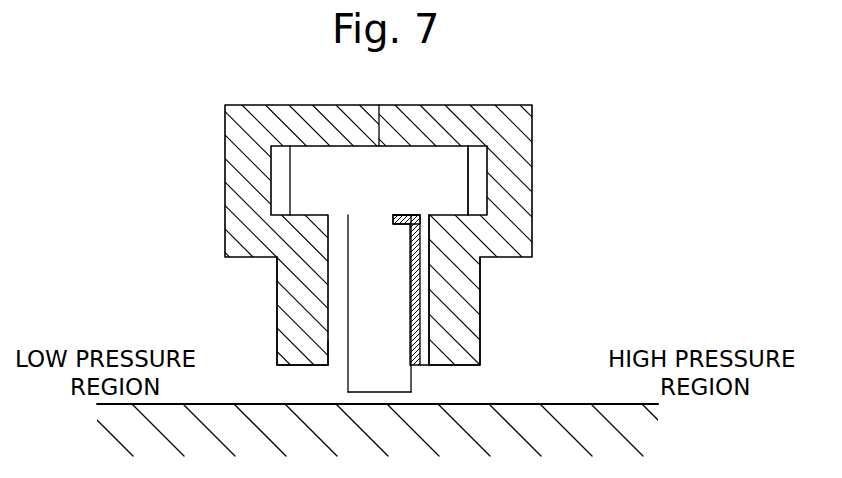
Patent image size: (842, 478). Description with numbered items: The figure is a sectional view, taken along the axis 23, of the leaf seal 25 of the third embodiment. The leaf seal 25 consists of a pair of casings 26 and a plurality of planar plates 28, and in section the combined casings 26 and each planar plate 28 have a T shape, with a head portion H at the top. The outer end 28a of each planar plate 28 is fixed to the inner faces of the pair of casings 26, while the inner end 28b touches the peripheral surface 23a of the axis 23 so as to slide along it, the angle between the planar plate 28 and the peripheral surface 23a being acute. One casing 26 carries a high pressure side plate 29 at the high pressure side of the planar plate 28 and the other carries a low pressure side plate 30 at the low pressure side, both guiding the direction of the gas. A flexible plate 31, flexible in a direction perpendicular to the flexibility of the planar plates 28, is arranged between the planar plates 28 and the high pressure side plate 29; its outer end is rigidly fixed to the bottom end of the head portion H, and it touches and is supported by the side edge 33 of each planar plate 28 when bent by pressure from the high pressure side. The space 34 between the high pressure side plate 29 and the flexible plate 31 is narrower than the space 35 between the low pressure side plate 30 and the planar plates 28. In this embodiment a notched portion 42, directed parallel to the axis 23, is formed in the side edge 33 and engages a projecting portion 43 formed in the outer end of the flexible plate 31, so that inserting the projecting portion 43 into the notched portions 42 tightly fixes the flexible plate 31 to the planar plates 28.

The axis 23 is at (575, 450).
The peripheral surface 23a is at (585, 404).
The leaf seal 25 is at (548, 104).
The casing 26 is at (307, 115).
The planar plate 28 is at (348, 283).
The outer end 28a is at (307, 160).
The inner end 28b is at (363, 382).
The high pressure side plate 29 is at (460, 312).
The low pressure side plate 30 is at (290, 328).
The flexible plate 31 is at (430, 298).
The side edge 33 is at (414, 278).
The space at the high pressure side 34 is at (425, 366).
The space at the low pressure side 35 is at (329, 365).
The notched portion 42 is at (401, 222).
The projecting portion 43 is at (410, 215).
The head portion H is at (452, 160).